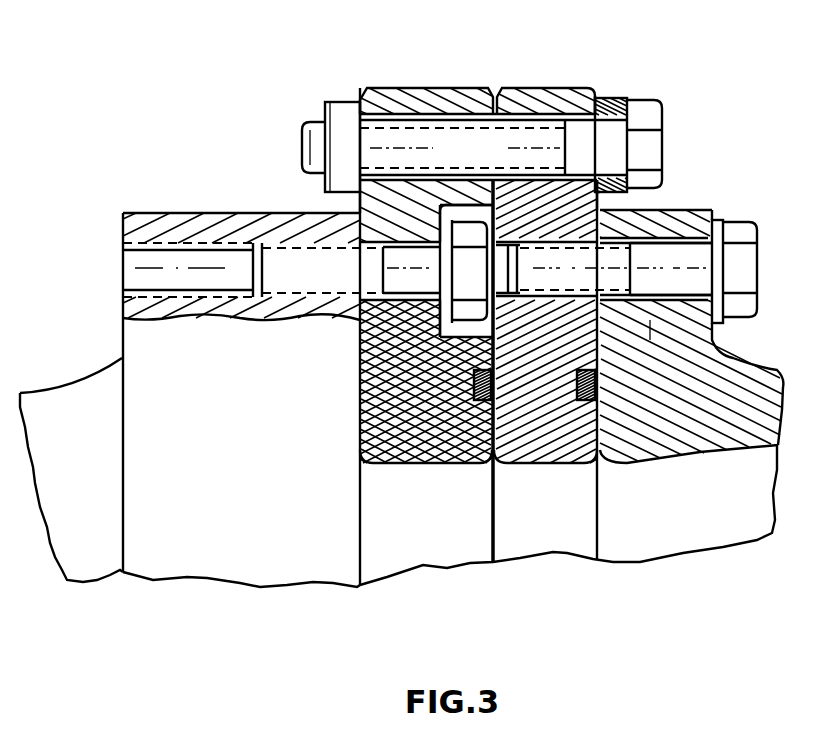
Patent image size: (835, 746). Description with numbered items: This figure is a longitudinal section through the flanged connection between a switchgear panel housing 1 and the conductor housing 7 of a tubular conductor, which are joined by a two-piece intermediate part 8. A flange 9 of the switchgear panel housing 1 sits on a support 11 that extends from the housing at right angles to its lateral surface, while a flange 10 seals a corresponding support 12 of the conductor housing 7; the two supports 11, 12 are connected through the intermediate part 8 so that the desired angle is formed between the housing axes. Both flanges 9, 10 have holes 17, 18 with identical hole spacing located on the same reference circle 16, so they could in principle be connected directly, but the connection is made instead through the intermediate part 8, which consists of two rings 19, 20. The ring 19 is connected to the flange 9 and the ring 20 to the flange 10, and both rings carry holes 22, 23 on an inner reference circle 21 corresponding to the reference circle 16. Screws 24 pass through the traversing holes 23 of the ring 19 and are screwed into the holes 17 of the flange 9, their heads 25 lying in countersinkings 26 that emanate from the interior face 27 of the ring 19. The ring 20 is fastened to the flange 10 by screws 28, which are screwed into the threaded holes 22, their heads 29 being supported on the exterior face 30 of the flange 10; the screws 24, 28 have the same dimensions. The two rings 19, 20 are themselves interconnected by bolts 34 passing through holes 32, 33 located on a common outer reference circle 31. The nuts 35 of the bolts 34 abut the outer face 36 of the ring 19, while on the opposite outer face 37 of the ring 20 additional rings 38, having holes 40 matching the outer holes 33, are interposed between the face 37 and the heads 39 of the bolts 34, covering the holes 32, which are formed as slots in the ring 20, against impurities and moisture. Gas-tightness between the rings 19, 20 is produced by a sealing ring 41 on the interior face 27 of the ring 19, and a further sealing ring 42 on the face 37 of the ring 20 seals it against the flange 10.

The switchgear panel housing 1 is at (50, 485).
The conductor housing 7 is at (718, 528).
The two-piece intermediate part 8 is at (467, 88).
The flange 9 is at (178, 225).
The flange 10 is at (705, 211).
The support 11 is at (102, 388).
The support 12 is at (765, 408).
The reference circle 16 is at (163, 268).
The holes 17 is at (125, 262).
The holes 18 is at (695, 283).
The ring 19 is at (417, 100).
The ring 20 is at (556, 95).
The inner reference circle 21 is at (362, 368).
The holes 22 is at (502, 240).
The traversing holes 23 is at (360, 323).
The screws 24 is at (278, 262).
The heads 25 is at (470, 318).
The countersinkings 26 is at (423, 460).
The interior face 27 is at (474, 464).
The screws 28 is at (733, 283).
The heads 29 is at (748, 237).
The exterior face 30 is at (720, 333).
The outer reference circle 31 is at (428, 148).
The holes (slots) 32 is at (582, 100).
The outer holes 33 is at (388, 112).
The bolts 34 is at (312, 147).
The nuts 35 is at (338, 108).
The outer face 36 is at (357, 197).
The outer face 37 is at (598, 197).
The rings 38 is at (622, 97).
The heads 39 is at (648, 149).
The holes 40 is at (663, 130).
The sealing ring 41 is at (452, 430).
The sealing ring 42 is at (586, 402).